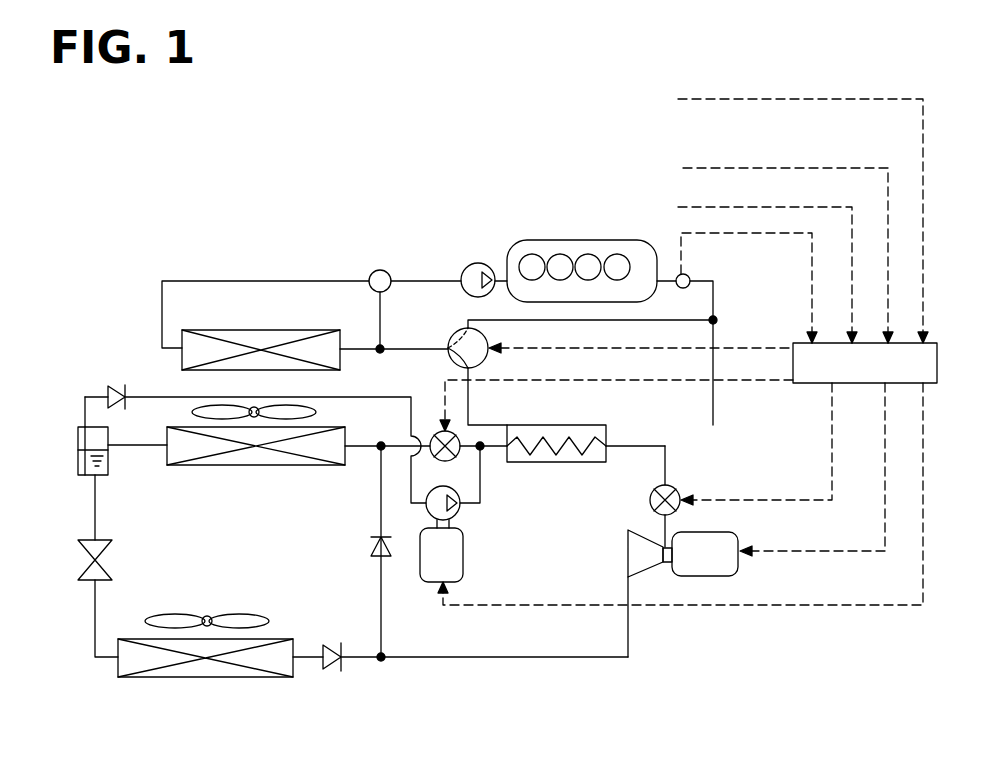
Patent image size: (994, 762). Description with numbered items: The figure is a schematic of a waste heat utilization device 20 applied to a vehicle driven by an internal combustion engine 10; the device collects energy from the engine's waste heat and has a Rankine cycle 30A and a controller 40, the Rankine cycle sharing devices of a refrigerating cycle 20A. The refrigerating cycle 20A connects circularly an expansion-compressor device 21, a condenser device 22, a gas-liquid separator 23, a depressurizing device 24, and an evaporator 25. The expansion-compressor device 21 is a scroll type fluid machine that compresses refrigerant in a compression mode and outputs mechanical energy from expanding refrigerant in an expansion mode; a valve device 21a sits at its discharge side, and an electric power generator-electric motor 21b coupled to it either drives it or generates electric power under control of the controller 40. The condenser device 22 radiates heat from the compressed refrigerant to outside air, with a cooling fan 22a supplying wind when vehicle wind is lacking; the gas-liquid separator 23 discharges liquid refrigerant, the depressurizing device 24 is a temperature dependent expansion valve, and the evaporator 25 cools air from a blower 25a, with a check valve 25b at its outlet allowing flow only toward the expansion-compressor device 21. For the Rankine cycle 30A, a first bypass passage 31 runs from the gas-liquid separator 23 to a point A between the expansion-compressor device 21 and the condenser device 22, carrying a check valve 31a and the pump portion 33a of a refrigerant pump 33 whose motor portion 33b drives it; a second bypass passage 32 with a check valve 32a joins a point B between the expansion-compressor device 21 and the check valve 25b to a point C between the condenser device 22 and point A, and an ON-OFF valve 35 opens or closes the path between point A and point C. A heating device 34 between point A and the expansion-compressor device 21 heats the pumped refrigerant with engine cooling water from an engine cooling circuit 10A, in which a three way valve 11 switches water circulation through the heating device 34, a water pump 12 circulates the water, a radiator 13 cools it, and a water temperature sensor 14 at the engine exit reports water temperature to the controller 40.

The internal combustion engine 10 is at (585, 240).
The engine cooling circuit 10A is at (222, 270).
The three way valve 11 is at (455, 334).
The water pump 12 is at (477, 262).
The radiator 13 is at (222, 330).
The water temperature sensor 14 is at (690, 274).
The waste heat utilization device 20 is at (97, 343).
The refrigerating cycle 20A is at (78, 516).
The expansion-compressor device 21 is at (640, 577).
The valve device 21a is at (650, 500).
The electric power generator-electric motor 21b is at (718, 576).
The condenser device 22 is at (262, 466).
The cooling fan 22a is at (318, 412).
The gas-liquid separator 23 is at (112, 470).
The depressurizing device 24 is at (112, 552).
The evaporator 25 is at (270, 640).
The blower 25a is at (238, 616).
The check valve 25b is at (330, 645).
The Rankine cycle 30A is at (78, 403).
The first bypass passage 31 is at (328, 394).
The check valve 31a is at (112, 390).
The second bypass passage 32 is at (381, 512).
The check valve 32a is at (371, 547).
The refrigerant pump 33 is at (540, 508).
The pump portion 33a is at (455, 512).
The motor portion 33b is at (455, 552).
The heating device 34 is at (540, 425).
The ON-OFF valve 35 is at (435, 432).
The controller 40 is at (797, 343).
The point A is at (484, 450).
The point B is at (386, 660).
The point C is at (377, 450).